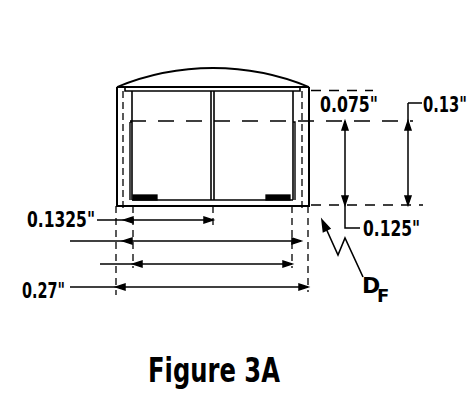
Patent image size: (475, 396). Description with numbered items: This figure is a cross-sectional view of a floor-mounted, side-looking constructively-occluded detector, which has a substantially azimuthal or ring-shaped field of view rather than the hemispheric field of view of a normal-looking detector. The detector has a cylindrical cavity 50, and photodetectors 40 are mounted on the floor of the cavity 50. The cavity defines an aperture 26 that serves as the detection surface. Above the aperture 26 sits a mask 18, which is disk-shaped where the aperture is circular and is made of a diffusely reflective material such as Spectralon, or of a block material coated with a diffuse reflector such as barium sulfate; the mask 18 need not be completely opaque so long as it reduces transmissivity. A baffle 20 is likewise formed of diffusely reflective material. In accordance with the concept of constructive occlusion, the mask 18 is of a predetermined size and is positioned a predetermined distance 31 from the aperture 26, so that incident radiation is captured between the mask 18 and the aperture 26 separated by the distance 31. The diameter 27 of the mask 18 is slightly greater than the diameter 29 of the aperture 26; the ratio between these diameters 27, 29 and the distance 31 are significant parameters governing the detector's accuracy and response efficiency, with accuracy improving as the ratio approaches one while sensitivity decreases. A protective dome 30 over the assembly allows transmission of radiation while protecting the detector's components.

The mask 18 is at (166, 87).
The baffle 20 is at (211, 143).
The aperture 26 is at (197, 110).
The diameter of the mask 27 is at (253, 242).
The diameter of the aperture 29 is at (176, 266).
The protective dome 30 is at (275, 61).
The distance between the mask and the aperture 31 is at (301, 100).
The photodetectors 40 is at (268, 193).
The cylindrical cavity 50 is at (246, 138).